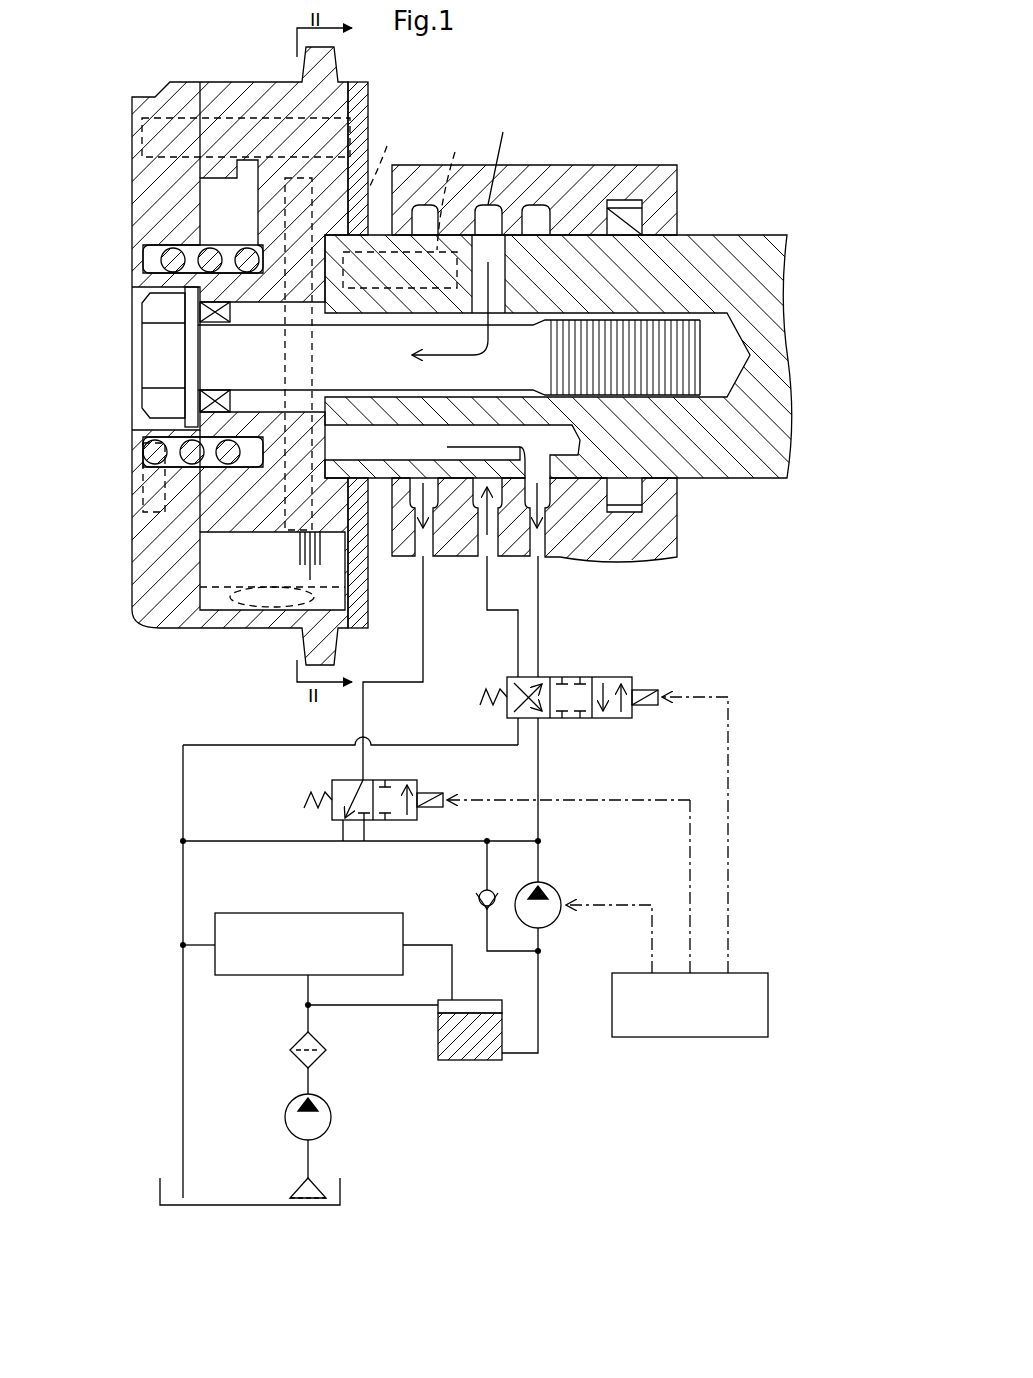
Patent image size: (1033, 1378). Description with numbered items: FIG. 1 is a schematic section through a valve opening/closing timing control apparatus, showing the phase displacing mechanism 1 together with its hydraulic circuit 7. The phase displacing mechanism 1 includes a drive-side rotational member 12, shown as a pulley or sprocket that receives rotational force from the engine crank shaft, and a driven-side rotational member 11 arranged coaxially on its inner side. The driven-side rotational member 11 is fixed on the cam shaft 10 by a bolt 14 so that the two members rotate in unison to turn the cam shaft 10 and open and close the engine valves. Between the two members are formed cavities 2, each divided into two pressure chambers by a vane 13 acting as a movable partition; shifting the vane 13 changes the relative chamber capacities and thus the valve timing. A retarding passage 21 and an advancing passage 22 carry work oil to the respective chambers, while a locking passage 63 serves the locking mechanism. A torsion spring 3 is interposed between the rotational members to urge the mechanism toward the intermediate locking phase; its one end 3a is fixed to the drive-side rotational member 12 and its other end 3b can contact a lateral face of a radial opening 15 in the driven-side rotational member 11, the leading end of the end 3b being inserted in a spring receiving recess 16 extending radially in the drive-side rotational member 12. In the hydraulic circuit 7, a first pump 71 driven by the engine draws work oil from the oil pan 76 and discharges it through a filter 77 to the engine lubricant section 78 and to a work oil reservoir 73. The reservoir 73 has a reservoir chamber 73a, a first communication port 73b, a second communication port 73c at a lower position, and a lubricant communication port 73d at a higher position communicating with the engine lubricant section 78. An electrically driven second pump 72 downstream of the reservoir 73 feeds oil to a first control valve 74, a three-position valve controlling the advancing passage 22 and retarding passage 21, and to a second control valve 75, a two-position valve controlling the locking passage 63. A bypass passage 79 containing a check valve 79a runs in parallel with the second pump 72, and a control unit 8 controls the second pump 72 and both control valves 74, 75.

The phase displacing mechanism 1 is at (104, 108).
The cavity 2 is at (222, 548).
The torsion spring 3 is at (160, 262).
The one end of torsion spring 3a is at (143, 486).
The other end of torsion spring 3b is at (240, 210).
The hydraulic circuit 7 is at (140, 790).
The control unit (ECU) 8 is at (768, 1005).
The cam shaft 10 is at (722, 250).
The driven-side rotational member 11 is at (207, 519).
The drive-side rotational member 12 is at (218, 92).
The vane 13 is at (243, 600).
The bolt 14 is at (152, 356).
The radial opening 15 is at (207, 190).
The spring receiving recess 16 is at (207, 165).
The retarding passage 21 is at (566, 586).
The advancing passage 22 is at (462, 614).
The locking passage 63 is at (404, 598).
The first pump 71 is at (333, 1115).
The second pump 72 is at (551, 885).
The work oil reservoir 73 is at (474, 1046).
The reservoir chamber 73a is at (447, 1041).
The first communication port 73b is at (438, 1003).
The second communication port 73c is at (508, 1062).
The lubricant communication port 73d is at (455, 1000).
The first control valve 74 is at (612, 677).
The second control valve 75 is at (332, 781).
The oil pan 76 is at (340, 1178).
The filter 77 is at (293, 1042).
The engine lubricant section 78 is at (305, 913).
The bypass passage 79 is at (472, 896).
The check valve 79a is at (480, 902).